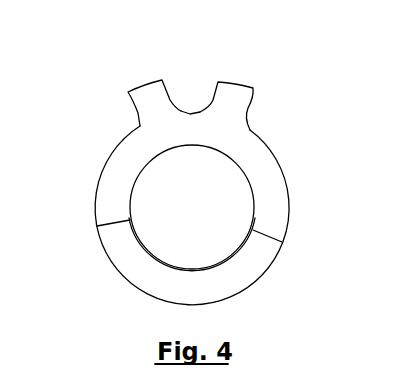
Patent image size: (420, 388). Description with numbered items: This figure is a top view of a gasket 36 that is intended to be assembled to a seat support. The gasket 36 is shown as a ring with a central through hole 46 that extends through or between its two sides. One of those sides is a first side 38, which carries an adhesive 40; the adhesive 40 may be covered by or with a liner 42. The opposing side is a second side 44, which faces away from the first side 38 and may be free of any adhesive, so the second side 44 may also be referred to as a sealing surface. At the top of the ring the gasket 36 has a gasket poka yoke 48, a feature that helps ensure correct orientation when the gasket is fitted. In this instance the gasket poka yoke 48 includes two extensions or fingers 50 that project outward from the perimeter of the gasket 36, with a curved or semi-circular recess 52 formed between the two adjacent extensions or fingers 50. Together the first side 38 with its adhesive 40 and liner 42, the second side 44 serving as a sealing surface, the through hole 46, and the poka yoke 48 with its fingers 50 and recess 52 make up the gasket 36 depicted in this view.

The gasket 36 is at (91, 82).
The first side 38 is at (268, 172).
The adhesive 40 is at (268, 214).
The liner 42 is at (248, 266).
The second side 44 is at (115, 190).
The through hole 46 is at (205, 222).
The gasket poka yoke 48 is at (221, 56).
The extensions or fingers 50 is at (143, 98).
The curved or semi-circular recess 52 is at (187, 103).